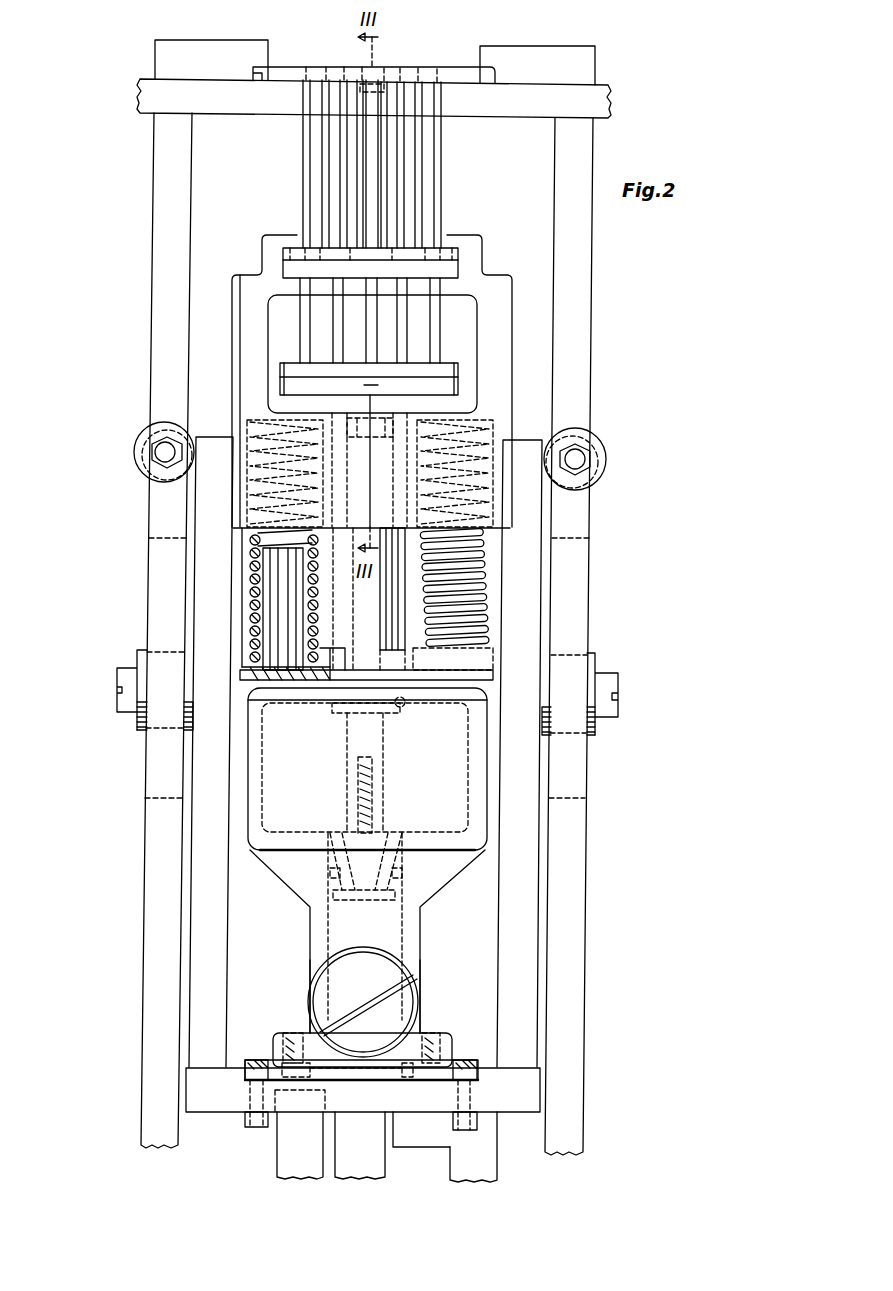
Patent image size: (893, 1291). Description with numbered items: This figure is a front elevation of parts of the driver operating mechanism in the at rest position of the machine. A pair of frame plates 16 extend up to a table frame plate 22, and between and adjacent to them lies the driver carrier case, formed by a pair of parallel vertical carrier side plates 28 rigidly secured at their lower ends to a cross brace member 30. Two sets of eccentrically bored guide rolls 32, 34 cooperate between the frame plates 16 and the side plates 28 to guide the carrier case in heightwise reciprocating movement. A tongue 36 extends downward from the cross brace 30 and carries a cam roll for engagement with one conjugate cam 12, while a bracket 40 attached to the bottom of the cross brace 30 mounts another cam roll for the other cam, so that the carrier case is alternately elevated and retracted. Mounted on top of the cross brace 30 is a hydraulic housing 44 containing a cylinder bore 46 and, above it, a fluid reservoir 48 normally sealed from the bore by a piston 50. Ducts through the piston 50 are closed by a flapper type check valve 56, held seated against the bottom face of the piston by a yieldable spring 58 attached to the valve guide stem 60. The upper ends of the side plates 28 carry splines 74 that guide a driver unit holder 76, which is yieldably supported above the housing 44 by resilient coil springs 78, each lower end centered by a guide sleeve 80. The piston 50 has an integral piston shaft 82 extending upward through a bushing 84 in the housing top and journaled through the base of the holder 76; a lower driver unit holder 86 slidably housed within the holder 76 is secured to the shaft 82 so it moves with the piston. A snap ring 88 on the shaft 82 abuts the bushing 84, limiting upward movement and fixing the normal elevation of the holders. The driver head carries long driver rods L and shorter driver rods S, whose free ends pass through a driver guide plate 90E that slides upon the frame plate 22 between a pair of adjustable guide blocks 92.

The triple lobed conjugate cam 12 is at (277, 1143).
The frame plate 16 is at (145, 905).
The table frame plate 22 is at (598, 97).
The carrier side plate 28 is at (194, 622).
The cross brace member 30 is at (366, 1115).
The eccentrically bored guide roll 32 is at (140, 440).
The eccentrically bored guide roll 34 is at (140, 734).
The tongue 36 is at (387, 1158).
The bracket 40 is at (498, 1160).
The housing 44 is at (415, 985).
The cylinder bore 46 is at (398, 920).
The fluid reservoir 48 is at (262, 800).
The piston 50 is at (328, 883).
The flapper type check valve 56 is at (386, 905).
The yieldable spring 58 is at (375, 795).
The valve guide stem 60 is at (375, 845).
The spline 74 is at (245, 440).
The driver unit holder 76 is at (513, 305).
The resilient coil spring 78 is at (253, 582).
The guide sleeve 80 is at (270, 628).
The piston shaft 82 is at (380, 614).
The bushing 84 is at (402, 708).
The lower driver unit holder 86 is at (470, 380).
The snap ring 88 is at (330, 706).
The driver guide plate 90E is at (448, 68).
The adjustable guide block 92 is at (205, 42).
The short driver rod S is at (322, 160).
The long driver rod L is at (300, 325).